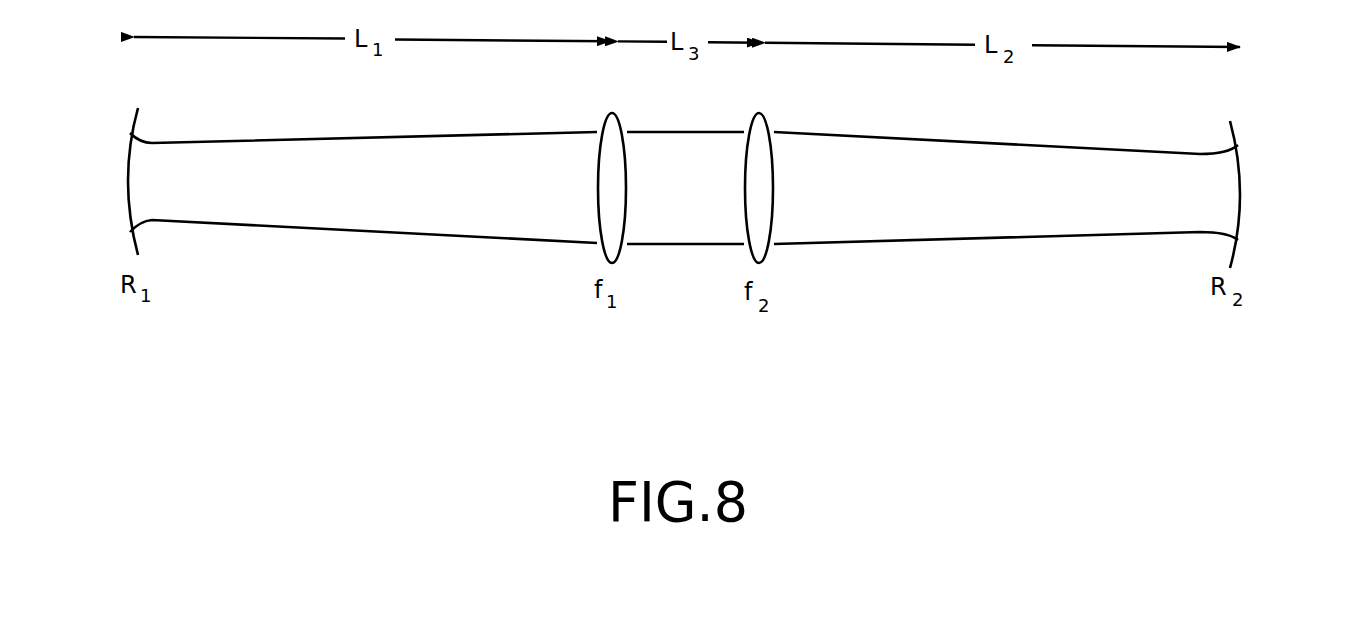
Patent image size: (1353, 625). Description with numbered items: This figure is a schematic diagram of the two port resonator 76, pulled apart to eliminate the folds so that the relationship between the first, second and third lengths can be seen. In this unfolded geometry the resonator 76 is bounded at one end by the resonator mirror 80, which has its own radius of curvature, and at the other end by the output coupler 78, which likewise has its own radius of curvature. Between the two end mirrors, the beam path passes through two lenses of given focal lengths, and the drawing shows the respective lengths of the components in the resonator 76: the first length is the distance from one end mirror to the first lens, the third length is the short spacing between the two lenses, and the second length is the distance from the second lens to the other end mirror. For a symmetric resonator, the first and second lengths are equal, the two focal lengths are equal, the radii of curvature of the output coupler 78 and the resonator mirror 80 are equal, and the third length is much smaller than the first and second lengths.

The two port resonator 76 is at (912, 291).
The output coupler 78 is at (1245, 160).
The resonator mirror 80 is at (124, 166).